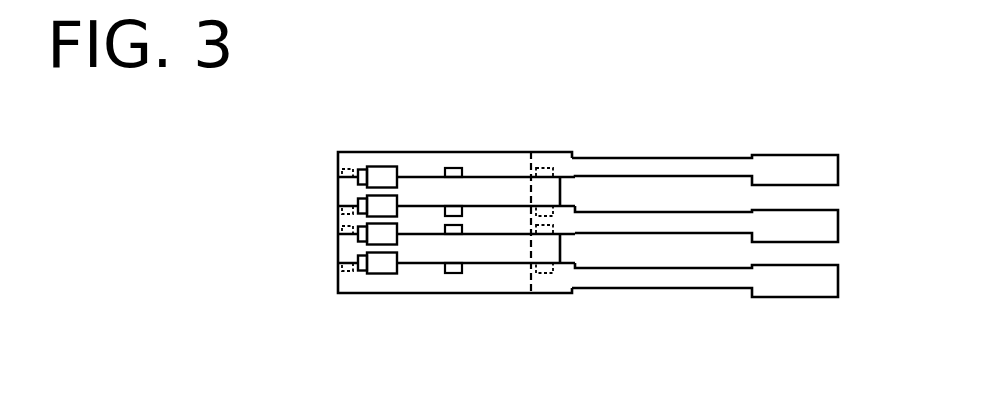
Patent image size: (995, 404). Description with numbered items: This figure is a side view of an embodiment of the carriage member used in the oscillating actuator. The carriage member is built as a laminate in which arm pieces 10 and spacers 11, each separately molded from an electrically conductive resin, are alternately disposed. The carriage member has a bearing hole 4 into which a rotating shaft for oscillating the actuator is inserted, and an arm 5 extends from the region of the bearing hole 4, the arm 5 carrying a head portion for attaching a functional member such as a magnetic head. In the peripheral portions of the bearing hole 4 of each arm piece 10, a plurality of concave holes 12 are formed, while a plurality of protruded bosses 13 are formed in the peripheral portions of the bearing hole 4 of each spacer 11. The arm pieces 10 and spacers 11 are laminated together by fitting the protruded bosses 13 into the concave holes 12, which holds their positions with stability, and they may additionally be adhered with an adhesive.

The bearing hole 4 is at (483, 293).
The arm 5 is at (682, 158).
The arm piece 10 is at (510, 163).
The spacer 11 is at (548, 193).
The concave hole 12 is at (448, 168).
The protruded boss 13 is at (467, 168).